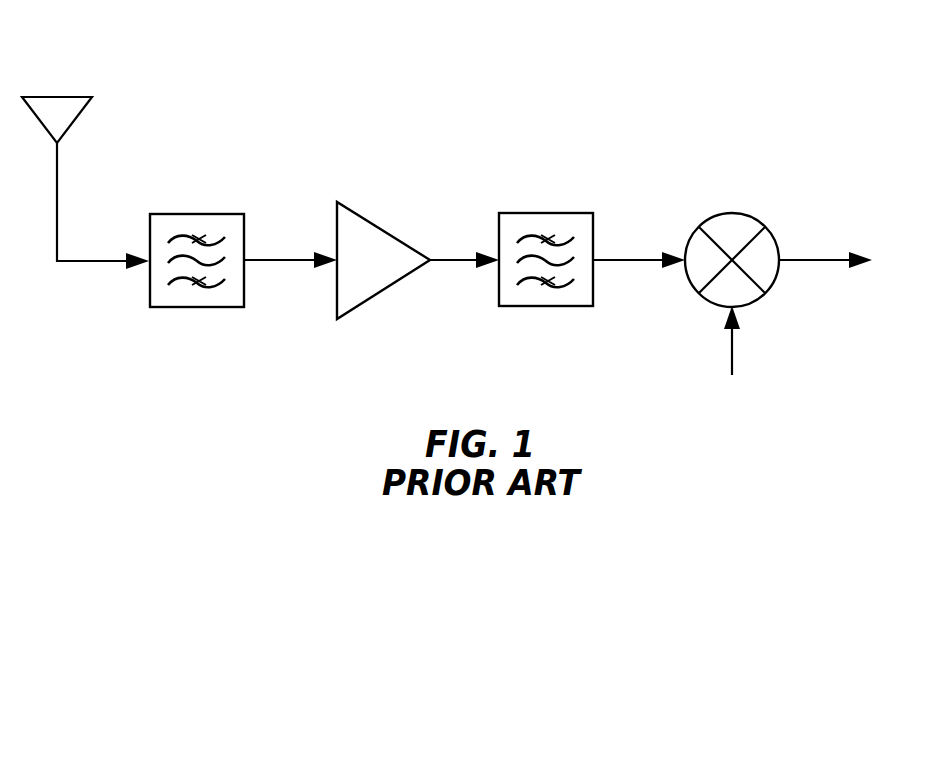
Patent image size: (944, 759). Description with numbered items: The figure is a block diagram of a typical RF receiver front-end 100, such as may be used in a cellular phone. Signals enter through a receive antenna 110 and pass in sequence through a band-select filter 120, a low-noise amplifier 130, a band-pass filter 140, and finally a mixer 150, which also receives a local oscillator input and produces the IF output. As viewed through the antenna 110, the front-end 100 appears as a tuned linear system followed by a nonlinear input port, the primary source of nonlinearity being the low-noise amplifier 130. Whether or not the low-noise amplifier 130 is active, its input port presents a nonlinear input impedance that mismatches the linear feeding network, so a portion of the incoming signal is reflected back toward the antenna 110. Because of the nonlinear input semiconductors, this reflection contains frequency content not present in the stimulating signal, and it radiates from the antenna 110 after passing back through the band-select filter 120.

The front-end 100 is at (602, 115).
The receive antenna 110 is at (77, 120).
The band-select filter 120 is at (198, 307).
The low-noise amplifier 130 is at (382, 293).
The band-pass filter 140 is at (548, 307).
The mixer 150 is at (752, 213).